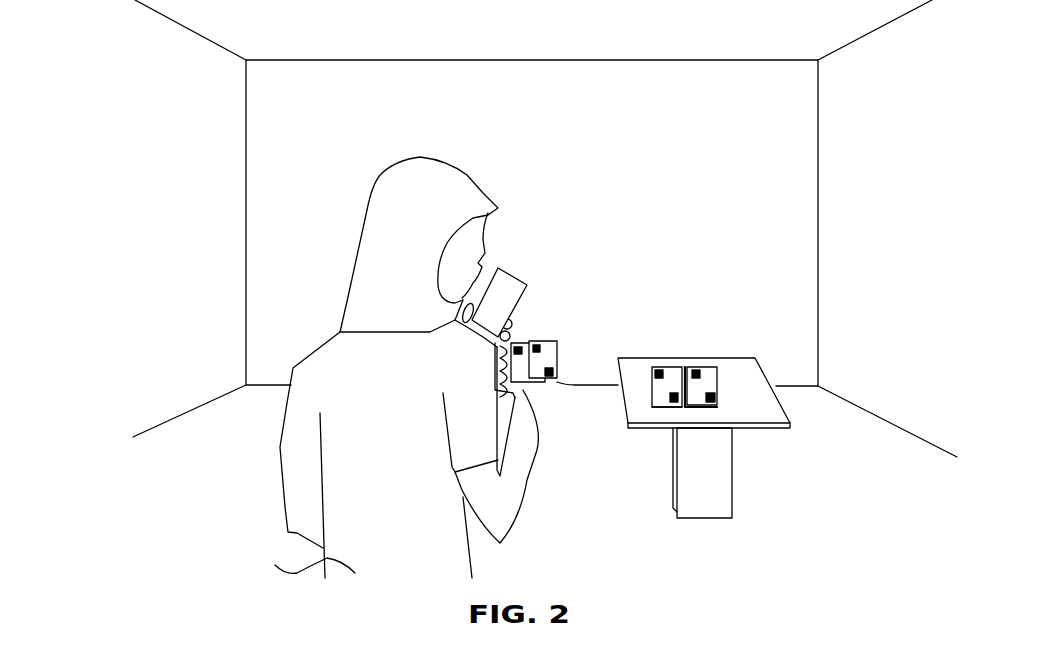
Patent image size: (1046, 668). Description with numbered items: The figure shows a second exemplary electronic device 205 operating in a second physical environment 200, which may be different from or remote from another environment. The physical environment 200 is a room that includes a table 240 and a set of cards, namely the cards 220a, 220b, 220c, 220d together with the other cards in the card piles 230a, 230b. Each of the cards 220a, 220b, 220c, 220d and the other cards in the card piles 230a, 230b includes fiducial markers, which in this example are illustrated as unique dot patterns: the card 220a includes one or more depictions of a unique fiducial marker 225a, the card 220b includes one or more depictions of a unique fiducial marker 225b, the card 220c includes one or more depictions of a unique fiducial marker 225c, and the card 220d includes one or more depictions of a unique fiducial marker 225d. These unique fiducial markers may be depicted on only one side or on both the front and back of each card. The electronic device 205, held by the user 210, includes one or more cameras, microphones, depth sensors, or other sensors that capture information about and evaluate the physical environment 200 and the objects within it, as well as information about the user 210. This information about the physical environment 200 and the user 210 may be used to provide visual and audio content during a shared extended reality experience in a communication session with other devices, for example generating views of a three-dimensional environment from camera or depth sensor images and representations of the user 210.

The physical environment 200 is at (130, 113).
The electronic device 205 is at (513, 276).
The user 210 is at (371, 367).
The card 220a is at (525, 385).
The card 220b is at (543, 381).
The card 220c is at (672, 367).
The card 220d is at (717, 378).
The fiducial marker 225a is at (515, 351).
The fiducial marker 225b is at (533, 349).
The fiducial marker 225c is at (658, 372).
The fiducial marker 225d is at (697, 370).
The card pile 230a is at (663, 407).
The card pile 230b is at (707, 406).
The table 240 is at (732, 490).